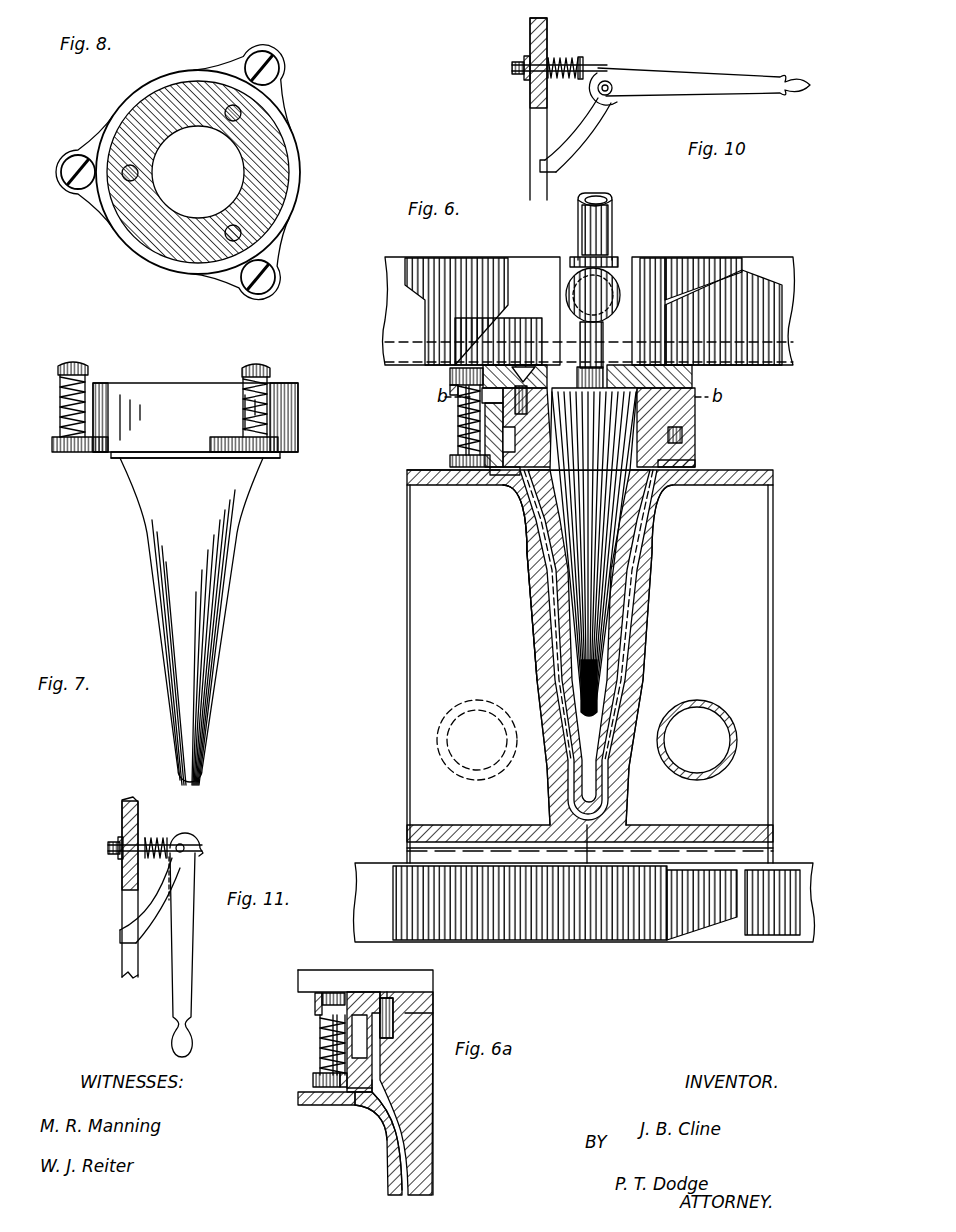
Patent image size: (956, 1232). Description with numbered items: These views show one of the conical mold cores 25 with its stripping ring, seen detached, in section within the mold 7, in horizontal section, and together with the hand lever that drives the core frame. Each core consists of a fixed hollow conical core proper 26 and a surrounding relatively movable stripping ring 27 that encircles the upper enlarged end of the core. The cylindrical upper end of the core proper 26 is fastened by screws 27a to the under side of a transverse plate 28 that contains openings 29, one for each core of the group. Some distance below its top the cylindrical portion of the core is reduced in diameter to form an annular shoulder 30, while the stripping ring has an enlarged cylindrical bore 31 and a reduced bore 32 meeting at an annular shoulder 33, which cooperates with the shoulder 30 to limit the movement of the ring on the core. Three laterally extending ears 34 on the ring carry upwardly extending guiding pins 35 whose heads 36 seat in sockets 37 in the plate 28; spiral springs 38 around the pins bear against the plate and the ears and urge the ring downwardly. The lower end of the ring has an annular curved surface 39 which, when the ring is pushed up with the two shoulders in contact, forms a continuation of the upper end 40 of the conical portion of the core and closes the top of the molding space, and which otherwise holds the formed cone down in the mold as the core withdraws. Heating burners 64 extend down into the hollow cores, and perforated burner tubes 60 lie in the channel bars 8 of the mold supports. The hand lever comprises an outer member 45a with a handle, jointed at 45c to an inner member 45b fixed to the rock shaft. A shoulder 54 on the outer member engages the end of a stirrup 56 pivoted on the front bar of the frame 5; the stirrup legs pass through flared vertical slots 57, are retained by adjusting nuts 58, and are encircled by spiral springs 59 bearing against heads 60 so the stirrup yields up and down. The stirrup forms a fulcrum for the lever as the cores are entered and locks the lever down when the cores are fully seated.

In FIG. 11, the frame 5 is at (131, 798).
In FIG. 10, the frame 5 is at (530, 23).
In FIG. 6, the funnel body 7 is at (588, 655).
In FIG. 6A, the funnel body 7 is at (406, 1093).
In FIG. 6, the channel bars 8 is at (407, 510).
In FIG. 7, the conical mold cores 25 is at (240, 548).
In FIG. 6, the conical mold cores 25 is at (628, 537).
In FIG. 6, the core proper 26 is at (634, 560).
In FIG. 7, the stripping ring 27 is at (195, 420).
In FIG. 6, the stripping ring 27 is at (698, 448).
In FIG. 6A, the stripping ring 27 is at (363, 1042).
In FIG. 8, the screws 27a is at (240, 113).
In FIG. 6, the screws 27a is at (530, 367).
In FIG. 6, the transverse plate 28 is at (505, 367).
In FIG. 6, the openings 29 is at (576, 380).
In FIG. 6, the annular shoulder 30 is at (490, 475).
In FIG. 6A, the annular shoulder 30 is at (360, 1104).
In FIG. 8, the enlarged cylindrical bore 31 is at (290, 170).
In FIG. 6, the enlarged cylindrical bore 31 is at (480, 428).
In FIG. 6A, the enlarged cylindrical bore 31 is at (352, 1035).
In FIG. 6, the reduced bore 32 is at (500, 488).
In FIG. 6A, the reduced bore 32 is at (372, 1112).
In FIG. 6, the annular shoulder 33 is at (470, 480).
In FIG. 6A, the annular shoulder 33 is at (347, 1096).
In FIG. 8, the ears 34 is at (250, 58).
In FIG. 7, the ears 34 is at (81, 453).
In FIG. 6, the ears 34 is at (450, 462).
In FIG. 6A, the ears 34 is at (330, 1080).
In FIG. 6, the guiding pins 35 is at (487, 418).
In FIG. 6A, the guiding pins 35 is at (328, 1045).
In FIG. 8, the heads 36 is at (266, 58).
In FIG. 7, the heads 36 is at (78, 356).
In FIG. 6, the heads 36 is at (452, 377).
In FIG. 6A, the heads 36 is at (320, 997).
In FIG. 6, the sockets 37 is at (470, 367).
In FIG. 6A, the sockets 37 is at (318, 1006).
In FIG. 7, the spiral springs 38 is at (62, 406).
In FIG. 6, the spiral springs 38 is at (458, 430).
In FIG. 6A, the spiral springs 38 is at (325, 1060).
In FIG. 7, the annular curved surface 39 is at (272, 457).
In FIG. 6, the annular curved surface 39 is at (700, 463).
In FIG. 6A, the annular curved surface 39 is at (381, 1140).
In FIG. 6, the upper end of conical portion 40 is at (525, 530).
In FIG. 6A, the upper end of conical portion 40 is at (378, 1092).
In FIG. 11, the outer lever member 45a is at (185, 952).
In FIG. 10, the outer lever member 45a is at (705, 82).
In FIG. 11, the inner lever member 45b is at (120, 935).
In FIG. 10, the inner lever member 45b is at (596, 130).
In FIG. 11, the joint 45c is at (190, 833).
In FIG. 10, the joint 45c is at (612, 96).
In FIG. 11, the shoulder 54 is at (203, 849).
In FIG. 10, the shoulder 54 is at (610, 72).
In FIG. 11, the stirrup 56 is at (110, 852).
In FIG. 10, the stirrup 56 is at (559, 86).
In FIG. 11, the flared vertical slots 57 is at (122, 862).
In FIG. 10, the flared vertical slots 57 is at (528, 80).
In FIG. 11, the adjusting nuts 58 is at (120, 838).
In FIG. 10, the adjusting nuts 58 is at (520, 60).
In FIG. 11, the spiral springs 59 is at (157, 838).
In FIG. 10, the spiral springs 59 is at (567, 56).
In FIG. 10, the heads 60 is at (582, 62).
In FIG. 6, the heads 60 is at (718, 698).
In FIG. 6, the burners 64 is at (596, 348).